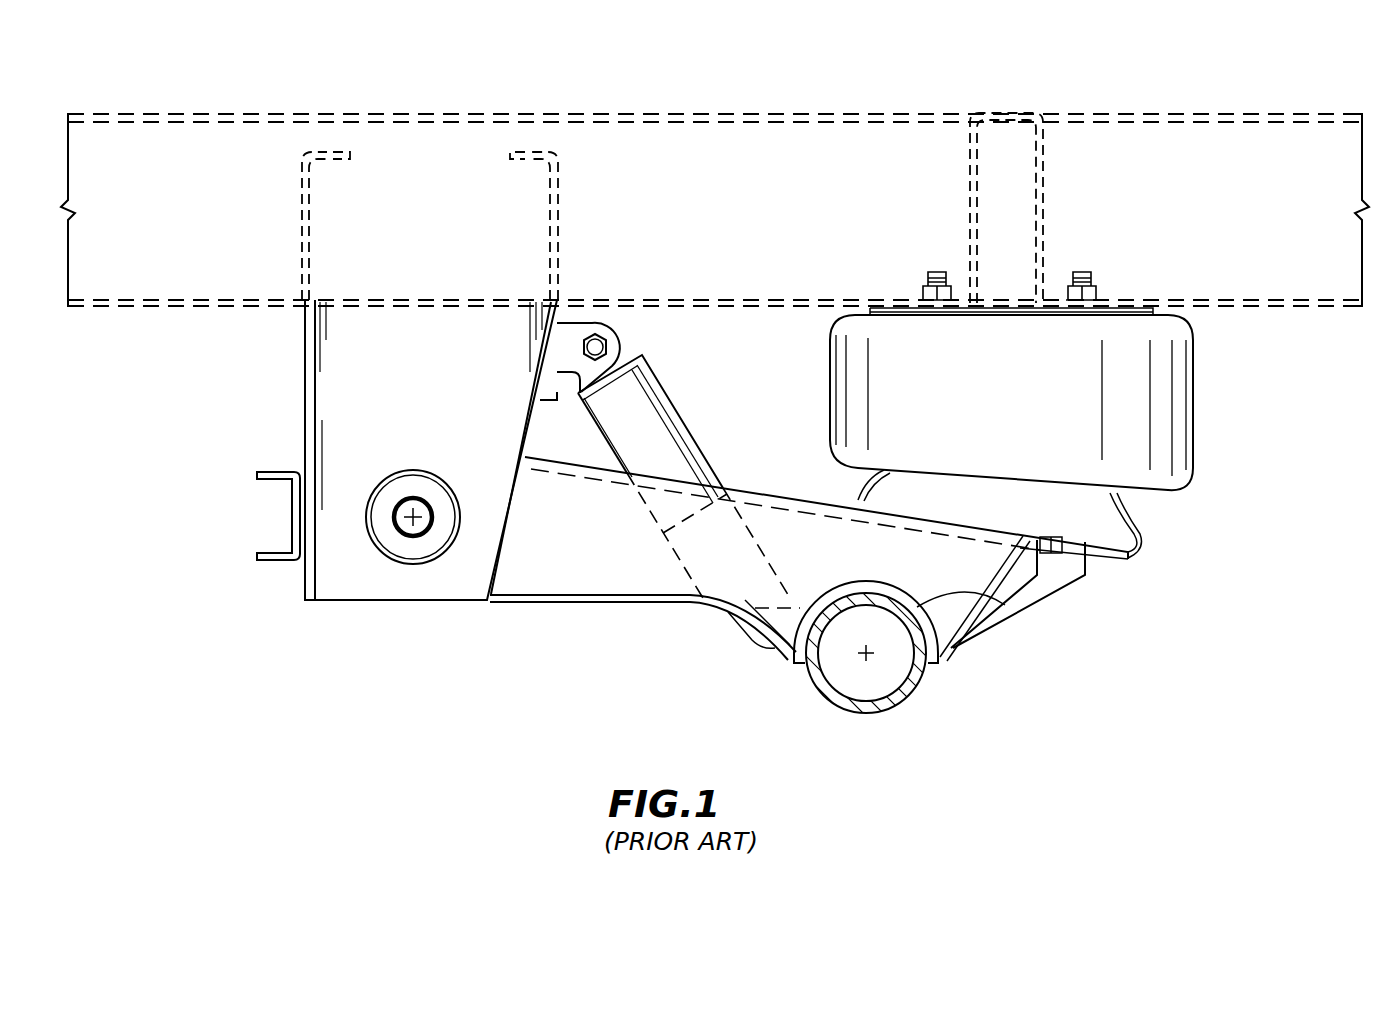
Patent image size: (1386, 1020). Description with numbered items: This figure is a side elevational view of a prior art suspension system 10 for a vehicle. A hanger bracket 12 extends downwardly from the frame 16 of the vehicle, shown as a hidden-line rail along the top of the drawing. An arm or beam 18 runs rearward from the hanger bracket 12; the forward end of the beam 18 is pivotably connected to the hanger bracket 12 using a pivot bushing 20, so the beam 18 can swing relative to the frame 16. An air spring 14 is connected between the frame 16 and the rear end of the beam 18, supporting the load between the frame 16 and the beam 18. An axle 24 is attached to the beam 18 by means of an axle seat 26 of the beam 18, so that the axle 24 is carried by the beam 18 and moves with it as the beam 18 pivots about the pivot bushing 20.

The suspension system 10 is at (738, 481).
The hanger bracket 12 is at (305, 386).
The air spring 14 is at (1195, 433).
The frame 16 is at (776, 112).
The arm or beam 18 is at (592, 603).
The pivot bushing 20 is at (413, 564).
The axle 24 is at (910, 693).
The axle seat 26 is at (1003, 604).